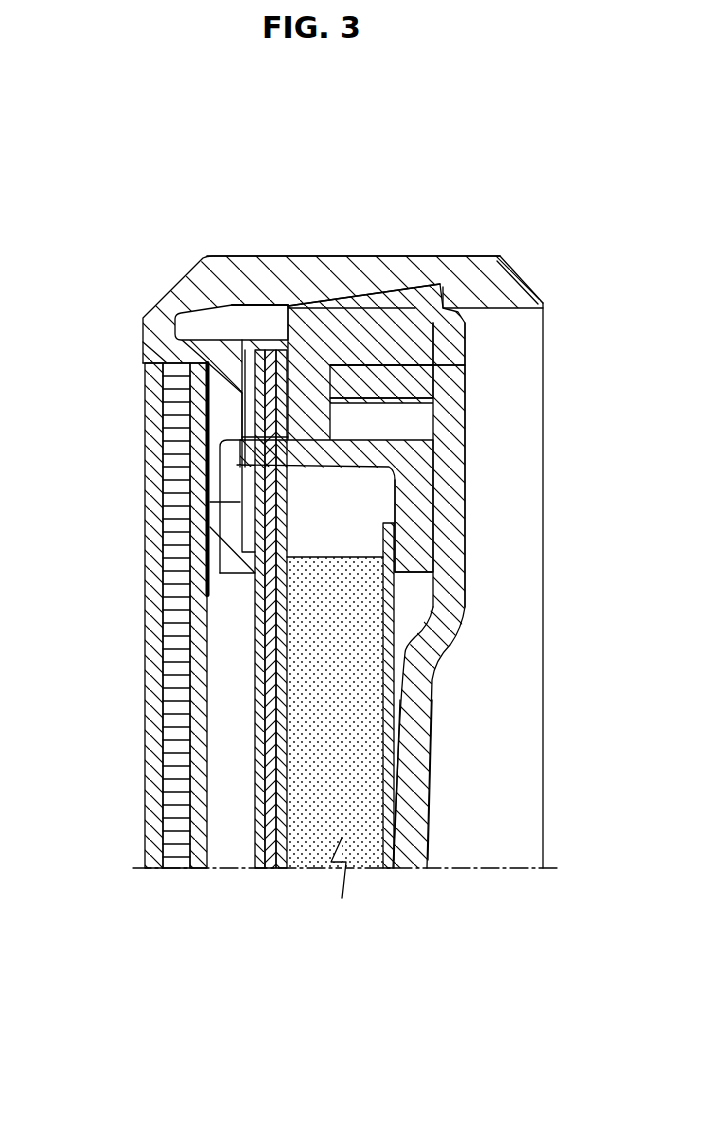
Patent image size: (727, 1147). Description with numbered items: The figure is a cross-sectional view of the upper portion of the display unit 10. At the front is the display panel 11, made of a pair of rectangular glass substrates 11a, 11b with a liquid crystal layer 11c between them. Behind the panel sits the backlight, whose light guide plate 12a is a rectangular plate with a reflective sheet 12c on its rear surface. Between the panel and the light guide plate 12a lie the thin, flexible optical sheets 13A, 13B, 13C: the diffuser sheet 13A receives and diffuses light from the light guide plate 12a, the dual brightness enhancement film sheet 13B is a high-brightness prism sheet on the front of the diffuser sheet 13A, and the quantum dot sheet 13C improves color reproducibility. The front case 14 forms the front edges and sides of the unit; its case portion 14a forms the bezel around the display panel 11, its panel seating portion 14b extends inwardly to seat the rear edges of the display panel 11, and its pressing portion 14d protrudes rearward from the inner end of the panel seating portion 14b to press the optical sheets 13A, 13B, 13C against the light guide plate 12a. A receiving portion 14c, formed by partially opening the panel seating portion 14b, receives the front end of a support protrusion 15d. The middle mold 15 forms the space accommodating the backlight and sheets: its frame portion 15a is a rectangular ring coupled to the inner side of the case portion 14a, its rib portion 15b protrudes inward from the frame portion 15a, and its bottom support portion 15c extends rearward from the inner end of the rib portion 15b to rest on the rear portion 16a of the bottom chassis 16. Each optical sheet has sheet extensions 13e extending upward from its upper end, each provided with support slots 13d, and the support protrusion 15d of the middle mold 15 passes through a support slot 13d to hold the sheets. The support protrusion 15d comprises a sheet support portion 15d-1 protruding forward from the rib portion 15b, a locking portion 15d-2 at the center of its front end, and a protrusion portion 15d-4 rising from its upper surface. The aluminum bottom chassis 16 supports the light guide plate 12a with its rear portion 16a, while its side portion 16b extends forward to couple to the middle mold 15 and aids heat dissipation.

The display unit 10 is at (160, 178).
The display panel 11 is at (146, 670).
The glass substrate 11a is at (153, 868).
The glass substrate 11b is at (197, 868).
The liquid crystal layer 11c is at (176, 868).
The light guide plate 12a is at (362, 868).
The reflective sheet 12c is at (388, 868).
The diffuser sheet 13A is at (282, 868).
The dual brightness enhancement film (DBEF) sheet 13B is at (268, 868).
The quantum dot sheet 13C is at (262, 868).
The support slot 13d is at (217, 482).
The sheet extension 13e is at (236, 338).
The front case 14 is at (313, 396).
The case portion 14a is at (250, 256).
The panel seating portion 14b is at (153, 355).
The receiving portion 14c is at (203, 410).
The pressing portion 14d is at (240, 580).
The middle mold 15 is at (310, 529).
The frame portion 15a is at (357, 287).
The rib portion 15b is at (445, 393).
The bottom support portion 15c is at (420, 492).
The support protrusion 15d is at (149, 441).
The sheet support portion 15d-1 is at (253, 453).
The locking portion 15d-2 is at (257, 502).
The protrusion portion 15d-4 is at (243, 433).
The bottom chassis 16 is at (466, 592).
The rear portion 16a is at (415, 745).
The side portion 16b is at (440, 352).